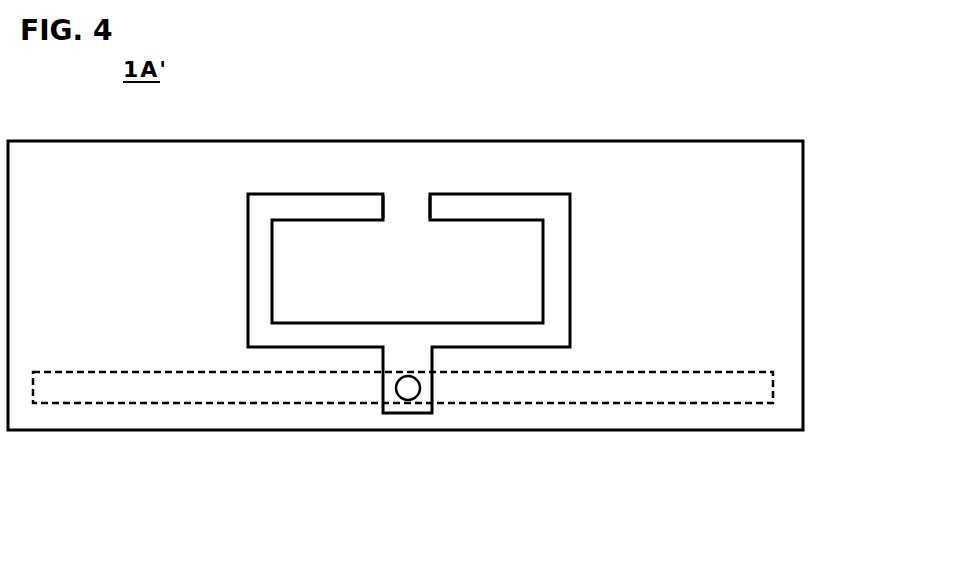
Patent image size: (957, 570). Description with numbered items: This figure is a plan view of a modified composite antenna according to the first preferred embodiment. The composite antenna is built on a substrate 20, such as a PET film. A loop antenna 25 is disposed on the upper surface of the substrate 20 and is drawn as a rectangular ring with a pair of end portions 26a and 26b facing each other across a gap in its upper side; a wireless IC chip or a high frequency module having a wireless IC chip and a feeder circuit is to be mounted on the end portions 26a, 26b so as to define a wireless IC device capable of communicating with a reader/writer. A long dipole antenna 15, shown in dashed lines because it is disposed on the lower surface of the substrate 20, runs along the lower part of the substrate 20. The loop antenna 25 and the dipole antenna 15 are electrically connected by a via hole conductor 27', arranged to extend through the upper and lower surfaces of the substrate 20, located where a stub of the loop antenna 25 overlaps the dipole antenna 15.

The substrate 20 is at (713, 141).
The loop antenna 25 is at (569, 265).
The end portion 26a is at (366, 204).
The end portion 26b is at (442, 204).
The dipole antenna 15 is at (713, 372).
The via hole conductor 27' is at (395, 454).